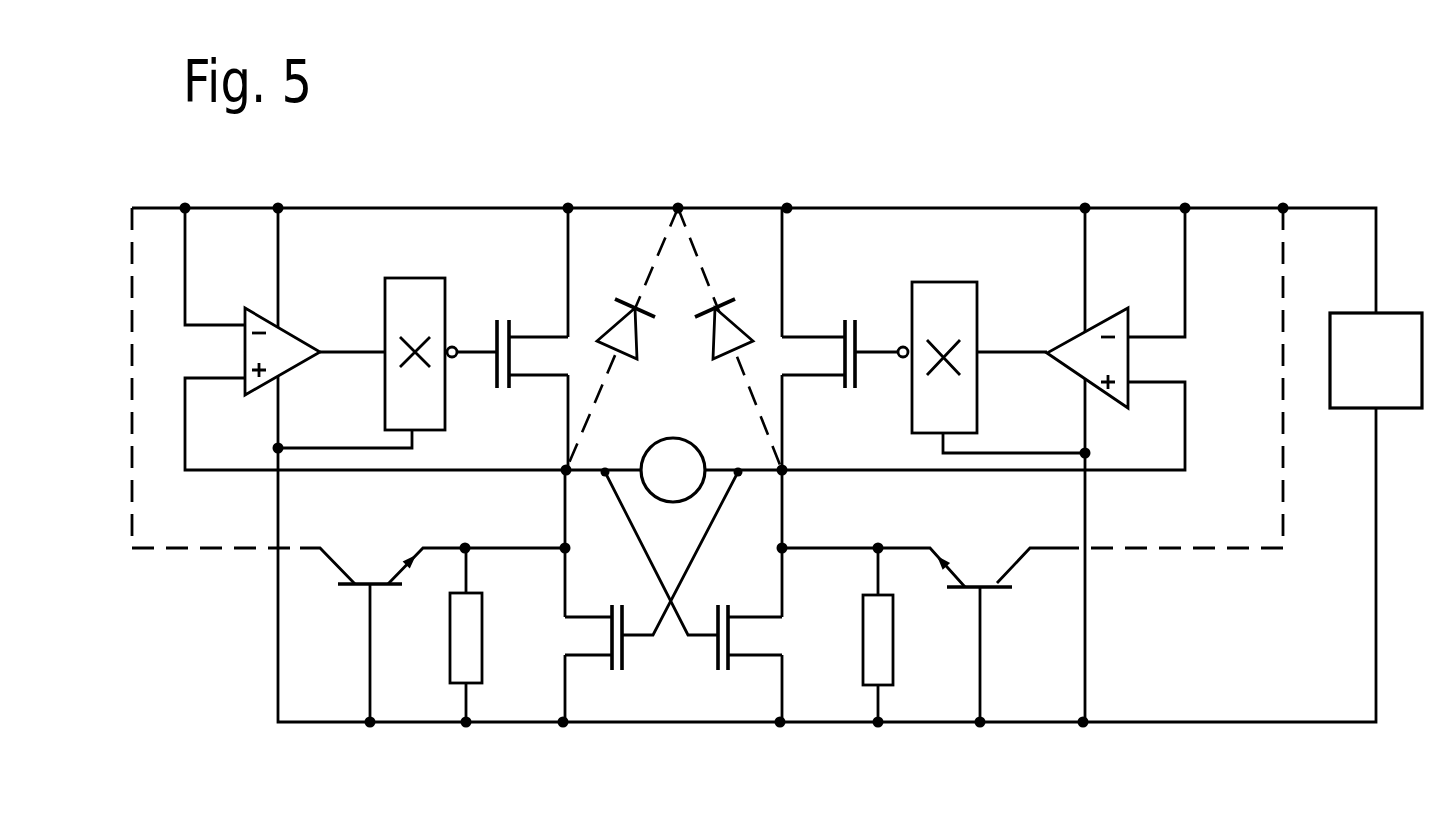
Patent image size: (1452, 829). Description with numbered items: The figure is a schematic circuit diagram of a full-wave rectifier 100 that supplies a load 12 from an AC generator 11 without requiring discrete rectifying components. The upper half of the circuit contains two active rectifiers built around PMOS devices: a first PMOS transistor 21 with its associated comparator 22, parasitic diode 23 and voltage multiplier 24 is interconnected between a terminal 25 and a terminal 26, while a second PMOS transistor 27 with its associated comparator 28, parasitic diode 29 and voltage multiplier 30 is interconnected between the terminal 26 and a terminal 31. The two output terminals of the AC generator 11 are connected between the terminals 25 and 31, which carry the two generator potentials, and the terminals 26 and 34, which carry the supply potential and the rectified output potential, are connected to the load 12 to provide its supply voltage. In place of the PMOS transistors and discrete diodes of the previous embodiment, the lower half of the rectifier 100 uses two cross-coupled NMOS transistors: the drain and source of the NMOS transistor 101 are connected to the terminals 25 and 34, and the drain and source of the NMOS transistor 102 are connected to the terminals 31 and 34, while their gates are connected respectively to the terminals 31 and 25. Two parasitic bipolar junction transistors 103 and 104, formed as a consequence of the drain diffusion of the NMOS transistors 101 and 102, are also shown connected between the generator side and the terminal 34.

The rectifier 100 is at (1252, 170).
The load 12 is at (1402, 330).
The AC generator 11 is at (692, 446).
The first PMOS transistor 21 is at (478, 335).
The comparator 22 is at (287, 347).
The parasitic diode 23 is at (615, 335).
The voltage multiplier 24 is at (411, 293).
The terminal 25 is at (563, 467).
The terminal 26 is at (678, 206).
The PMOS transistor 27 is at (843, 335).
The comparator 28 is at (1108, 338).
The parasitic diode 29 is at (732, 340).
The voltage multiplier 30 is at (958, 322).
The terminal 31 is at (790, 468).
The terminal 34 is at (562, 725).
The NMOS transistor 101 is at (578, 612).
The NMOS transistor 102 is at (760, 612).
The parasitic bipolar junction transistor 103 is at (375, 556).
The parasitic bipolar junction transistor 104 is at (986, 556).